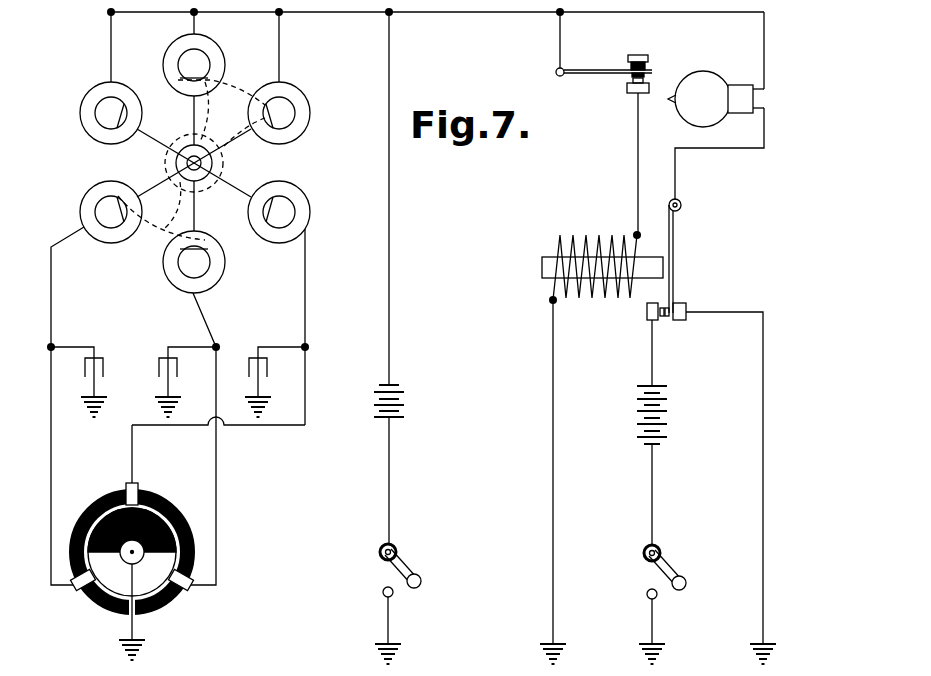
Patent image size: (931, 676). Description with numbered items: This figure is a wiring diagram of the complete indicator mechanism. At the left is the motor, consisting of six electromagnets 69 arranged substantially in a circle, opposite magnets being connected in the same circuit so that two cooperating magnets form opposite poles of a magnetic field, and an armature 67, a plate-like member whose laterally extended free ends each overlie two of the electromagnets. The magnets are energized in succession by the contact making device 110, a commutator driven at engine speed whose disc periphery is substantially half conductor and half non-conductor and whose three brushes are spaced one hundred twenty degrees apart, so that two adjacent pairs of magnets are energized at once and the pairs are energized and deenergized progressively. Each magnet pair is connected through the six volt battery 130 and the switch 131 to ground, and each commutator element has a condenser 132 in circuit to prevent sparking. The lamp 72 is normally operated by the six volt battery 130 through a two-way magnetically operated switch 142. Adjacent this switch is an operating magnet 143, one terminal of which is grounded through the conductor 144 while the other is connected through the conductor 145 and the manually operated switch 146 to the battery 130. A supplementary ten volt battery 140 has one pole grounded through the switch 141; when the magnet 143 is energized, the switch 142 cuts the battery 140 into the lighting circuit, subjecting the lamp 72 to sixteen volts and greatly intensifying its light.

The armature member 67 is at (230, 98).
The electromagnets 69 is at (300, 212).
The condenser 132 is at (176, 340).
The contact making device 110 is at (168, 515).
The six volt battery 130 is at (402, 390).
The switch 131 is at (399, 566).
The manually operated switch 146 is at (588, 62).
The conductor 145 is at (636, 149).
The incandescent lamp 72 is at (718, 86).
The operating magnet 143 is at (559, 237).
The conductor 144 is at (553, 406).
The two-way magnetically operated switch 142 is at (672, 246).
The supplementary battery 140 is at (668, 433).
The switch 141 is at (670, 571).